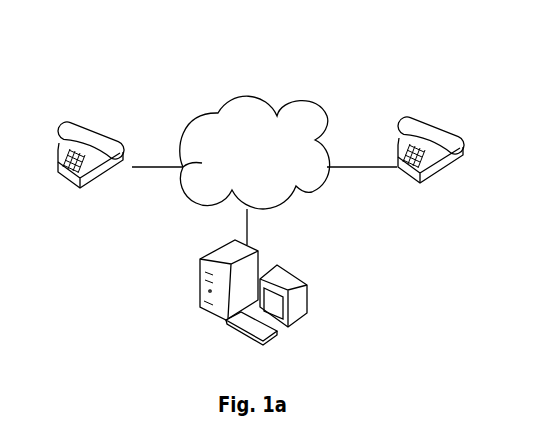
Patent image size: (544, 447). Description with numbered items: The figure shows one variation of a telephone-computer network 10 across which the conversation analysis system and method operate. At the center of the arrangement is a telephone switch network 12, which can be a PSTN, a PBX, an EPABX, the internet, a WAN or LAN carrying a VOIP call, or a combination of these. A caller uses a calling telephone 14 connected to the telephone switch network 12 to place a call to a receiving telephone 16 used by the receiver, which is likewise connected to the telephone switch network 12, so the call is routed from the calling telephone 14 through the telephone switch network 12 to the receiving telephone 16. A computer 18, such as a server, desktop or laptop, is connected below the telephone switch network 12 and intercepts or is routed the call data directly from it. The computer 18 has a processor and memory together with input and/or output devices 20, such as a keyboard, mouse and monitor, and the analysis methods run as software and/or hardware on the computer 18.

The telephone-computer network 10 is at (130, 268).
The telephone switch network 12 is at (303, 103).
The calling telephone 14 is at (90, 123).
The receiving telephone 16 is at (448, 128).
The computer 18 is at (260, 252).
The input and/or output devices 20 is at (312, 318).